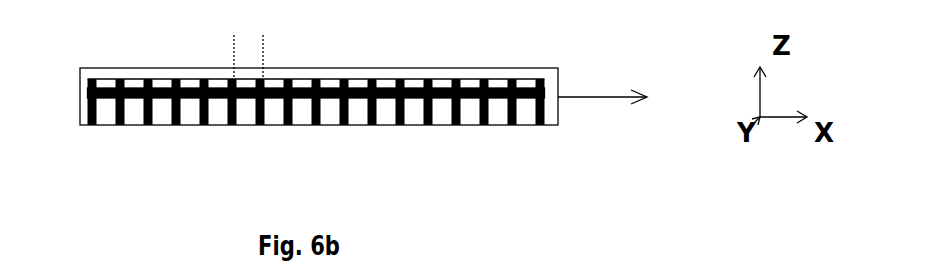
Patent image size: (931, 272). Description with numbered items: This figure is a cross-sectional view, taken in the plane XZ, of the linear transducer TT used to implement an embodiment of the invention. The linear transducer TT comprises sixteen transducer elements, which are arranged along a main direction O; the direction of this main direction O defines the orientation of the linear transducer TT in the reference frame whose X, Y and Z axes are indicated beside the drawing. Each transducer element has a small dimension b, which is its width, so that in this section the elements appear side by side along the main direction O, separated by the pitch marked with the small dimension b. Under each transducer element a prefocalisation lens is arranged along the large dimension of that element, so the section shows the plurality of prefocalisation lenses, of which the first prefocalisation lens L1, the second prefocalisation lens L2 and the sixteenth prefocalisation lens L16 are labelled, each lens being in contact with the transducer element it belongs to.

The prefocalisation lens L1 is at (107, 115).
The prefocalisation lens L2 is at (137, 118).
The prefocalisation lens L16 is at (513, 125).
The linear transducer TT is at (318, 144).
The main direction O is at (607, 97).
The small dimension b is at (197, 33).